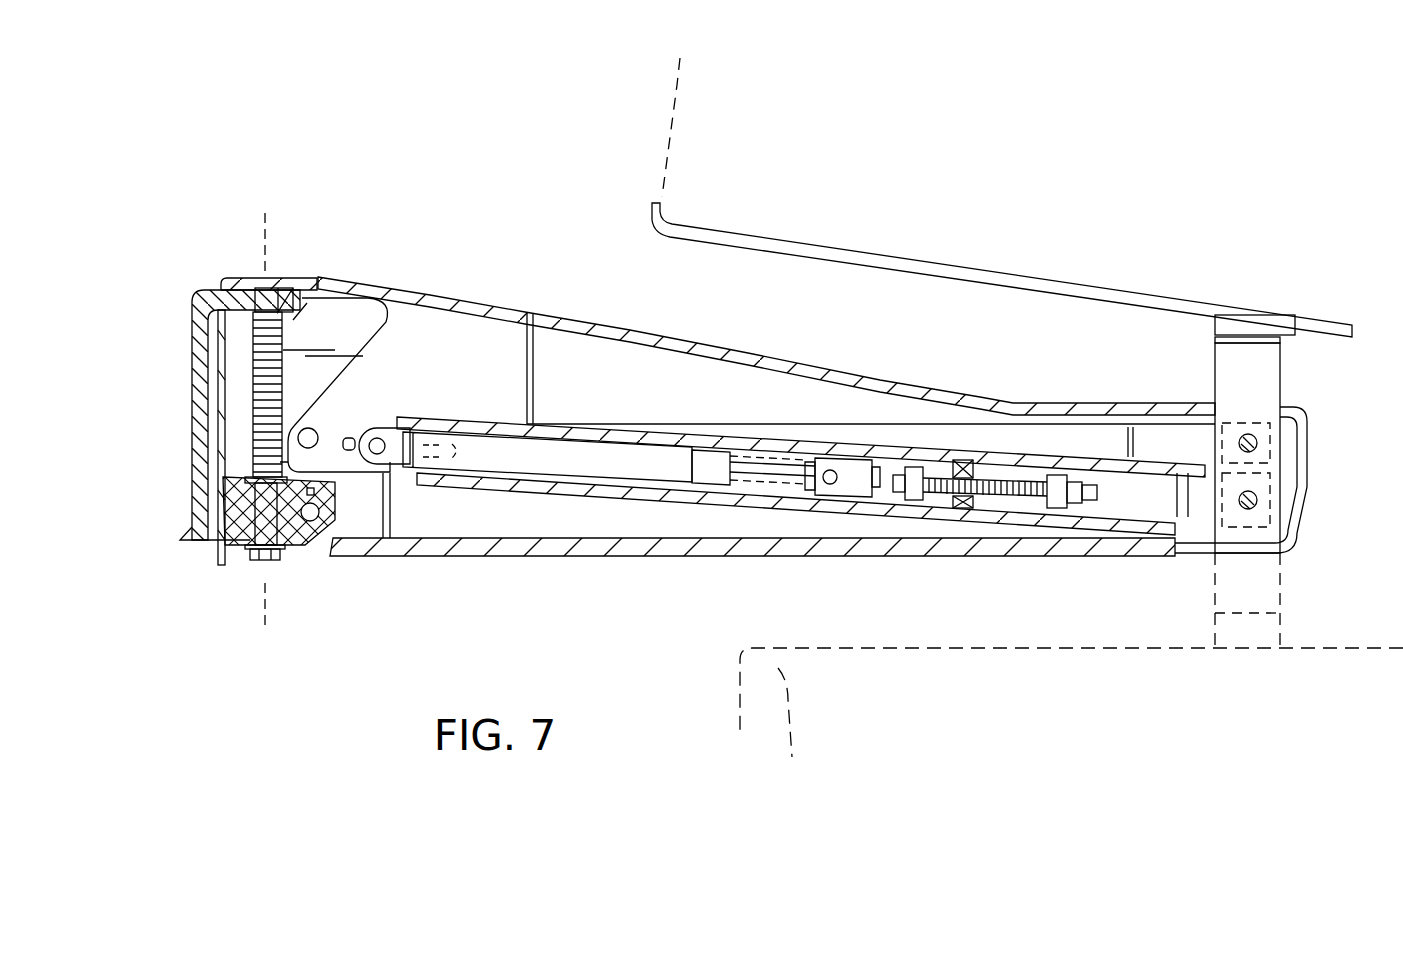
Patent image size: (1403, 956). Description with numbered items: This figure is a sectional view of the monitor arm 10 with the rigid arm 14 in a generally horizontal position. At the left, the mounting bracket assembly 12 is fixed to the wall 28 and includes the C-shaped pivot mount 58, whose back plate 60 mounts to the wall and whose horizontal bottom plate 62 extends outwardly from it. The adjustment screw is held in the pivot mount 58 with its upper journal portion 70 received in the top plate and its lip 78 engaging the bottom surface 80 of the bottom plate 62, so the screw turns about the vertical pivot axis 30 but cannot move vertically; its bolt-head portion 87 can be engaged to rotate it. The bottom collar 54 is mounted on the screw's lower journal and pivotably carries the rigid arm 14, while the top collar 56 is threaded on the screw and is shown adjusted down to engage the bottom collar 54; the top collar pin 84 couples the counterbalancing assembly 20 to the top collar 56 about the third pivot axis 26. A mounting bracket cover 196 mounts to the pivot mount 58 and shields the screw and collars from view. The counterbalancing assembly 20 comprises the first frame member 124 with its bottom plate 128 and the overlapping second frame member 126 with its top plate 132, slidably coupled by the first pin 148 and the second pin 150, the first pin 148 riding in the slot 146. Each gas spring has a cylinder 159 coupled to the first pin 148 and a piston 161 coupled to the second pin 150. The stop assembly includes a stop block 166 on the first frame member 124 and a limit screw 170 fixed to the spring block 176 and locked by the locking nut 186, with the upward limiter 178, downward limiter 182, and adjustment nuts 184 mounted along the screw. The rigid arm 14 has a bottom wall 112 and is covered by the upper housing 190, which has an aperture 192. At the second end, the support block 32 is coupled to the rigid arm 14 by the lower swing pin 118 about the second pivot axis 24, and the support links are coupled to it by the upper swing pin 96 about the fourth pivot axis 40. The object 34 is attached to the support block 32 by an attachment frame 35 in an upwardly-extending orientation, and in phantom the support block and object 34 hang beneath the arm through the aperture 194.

The monitor arm 10 is at (484, 232).
The mounting bracket assembly 12 is at (218, 413).
The rigid arm 14 is at (658, 575).
The counterbalancing assembly 20 is at (609, 420).
The second pivot axis 24 is at (1262, 505).
The third pivot axis 26 is at (318, 428).
The wall 28 is at (310, 521).
The vertical pivot axis 30 is at (265, 620).
The support block 32 is at (1231, 510).
The object 34 is at (676, 100).
The attachment frame 35 is at (1220, 323).
The fourth pivot axis 40 is at (1258, 434).
The bottom collar 54 is at (324, 512).
The top collar 56 is at (268, 418).
The pivot mount 58 is at (200, 285).
The back plate 60 is at (218, 382).
The bottom plate 62 is at (208, 530).
The upper journal portion 70 is at (278, 413).
The lip 78 is at (248, 552).
The bottom surface 80 is at (212, 540).
The top collar pin 84 is at (350, 385).
The bolt-head portion 87 is at (272, 560).
The upper swing pin 96 is at (1240, 444).
The bottom wall 112 is at (736, 558).
The lower swing pin 118 is at (1258, 500).
The first frame member 124 is at (625, 506).
The second frame member 126 is at (801, 420).
The bottom plate 128 is at (796, 504).
The top plate 132 is at (582, 424).
The slot 146 is at (352, 452).
The first pin 148 is at (382, 438).
The second pin 150 is at (844, 444).
The cylinder 159 is at (645, 445).
The piston 161 is at (787, 462).
The stop block 166 is at (980, 470).
The limit screw 170 is at (1025, 480).
The spring block 176 is at (850, 476).
The upward limiter 178 is at (962, 470).
The downward limiter 182 is at (1090, 515).
The adjustment nut 184 is at (912, 478).
The locking nut 186 is at (892, 470).
The upper housing 190 is at (750, 355).
The aperture 192 is at (1290, 398).
The aperture 194 is at (1190, 566).
The mounting bracket cover 196 is at (236, 276).